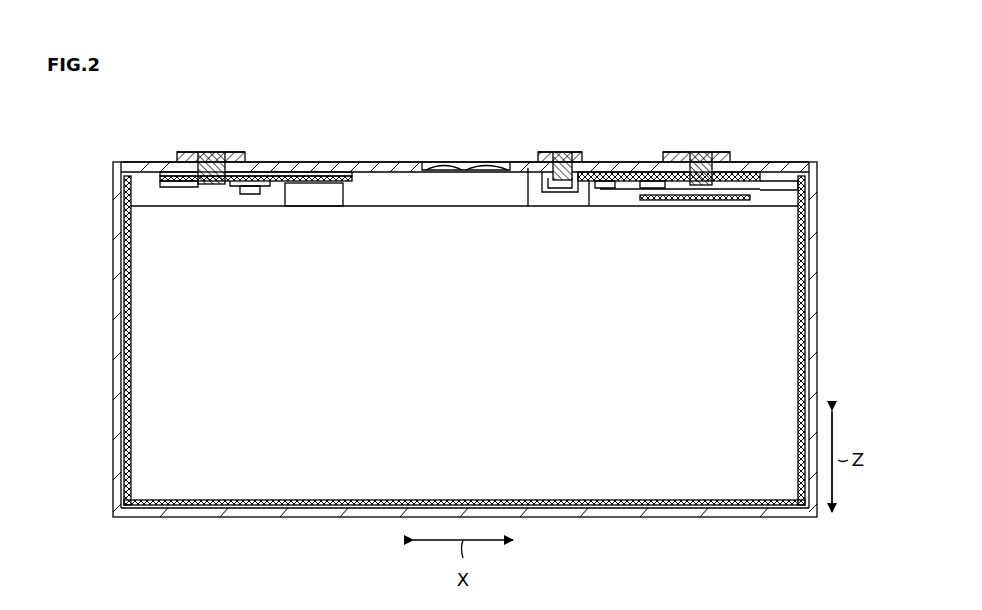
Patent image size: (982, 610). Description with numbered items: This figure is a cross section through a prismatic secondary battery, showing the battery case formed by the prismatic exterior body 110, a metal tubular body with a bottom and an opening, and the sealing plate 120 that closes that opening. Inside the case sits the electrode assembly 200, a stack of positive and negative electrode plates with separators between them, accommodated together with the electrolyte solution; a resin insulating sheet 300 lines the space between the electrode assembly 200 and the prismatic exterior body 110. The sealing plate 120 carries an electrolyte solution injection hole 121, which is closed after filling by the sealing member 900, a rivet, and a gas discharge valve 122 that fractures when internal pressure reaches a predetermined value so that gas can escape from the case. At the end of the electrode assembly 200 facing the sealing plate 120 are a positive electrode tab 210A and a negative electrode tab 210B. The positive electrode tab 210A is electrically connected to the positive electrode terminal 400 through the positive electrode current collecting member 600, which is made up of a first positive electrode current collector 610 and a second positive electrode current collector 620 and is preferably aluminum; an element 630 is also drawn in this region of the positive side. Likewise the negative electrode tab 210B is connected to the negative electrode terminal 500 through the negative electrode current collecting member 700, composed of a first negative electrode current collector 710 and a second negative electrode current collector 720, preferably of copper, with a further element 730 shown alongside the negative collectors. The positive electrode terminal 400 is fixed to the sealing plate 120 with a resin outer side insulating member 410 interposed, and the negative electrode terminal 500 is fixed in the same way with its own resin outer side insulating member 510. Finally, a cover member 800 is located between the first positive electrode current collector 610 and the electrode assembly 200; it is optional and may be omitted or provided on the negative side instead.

The prismatic exterior body 110 is at (814, 318).
The sealing plate 120 is at (400, 165).
The electrolyte solution injection hole 121 is at (553, 158).
The gas discharge valve 122 is at (453, 165).
The electrode assembly 200 is at (770, 370).
The positive electrode tab 210A is at (540, 200).
The negative electrode tab 210B is at (337, 198).
The insulating sheet 300 is at (127, 380).
The positive electrode terminal 400 is at (694, 160).
The outer side insulating member 410 is at (731, 160).
The negative electrode terminal 500 is at (212, 153).
The outer side insulating member 510 is at (181, 156).
The positive electrode current collecting member 600 is at (627, 202).
The first positive electrode current collector 610 is at (803, 190).
The second positive electrode current collector 620 is at (600, 172).
The second insulating member 630 is at (636, 172).
The negative electrode current collecting member 700 is at (256, 198).
The first negative electrode current collector 710 is at (175, 182).
The second negative electrode current collector 720 is at (275, 177).
The first insulating member 730 is at (297, 174).
The cover member 800 is at (750, 198).
The sealing member 900 is at (562, 158).